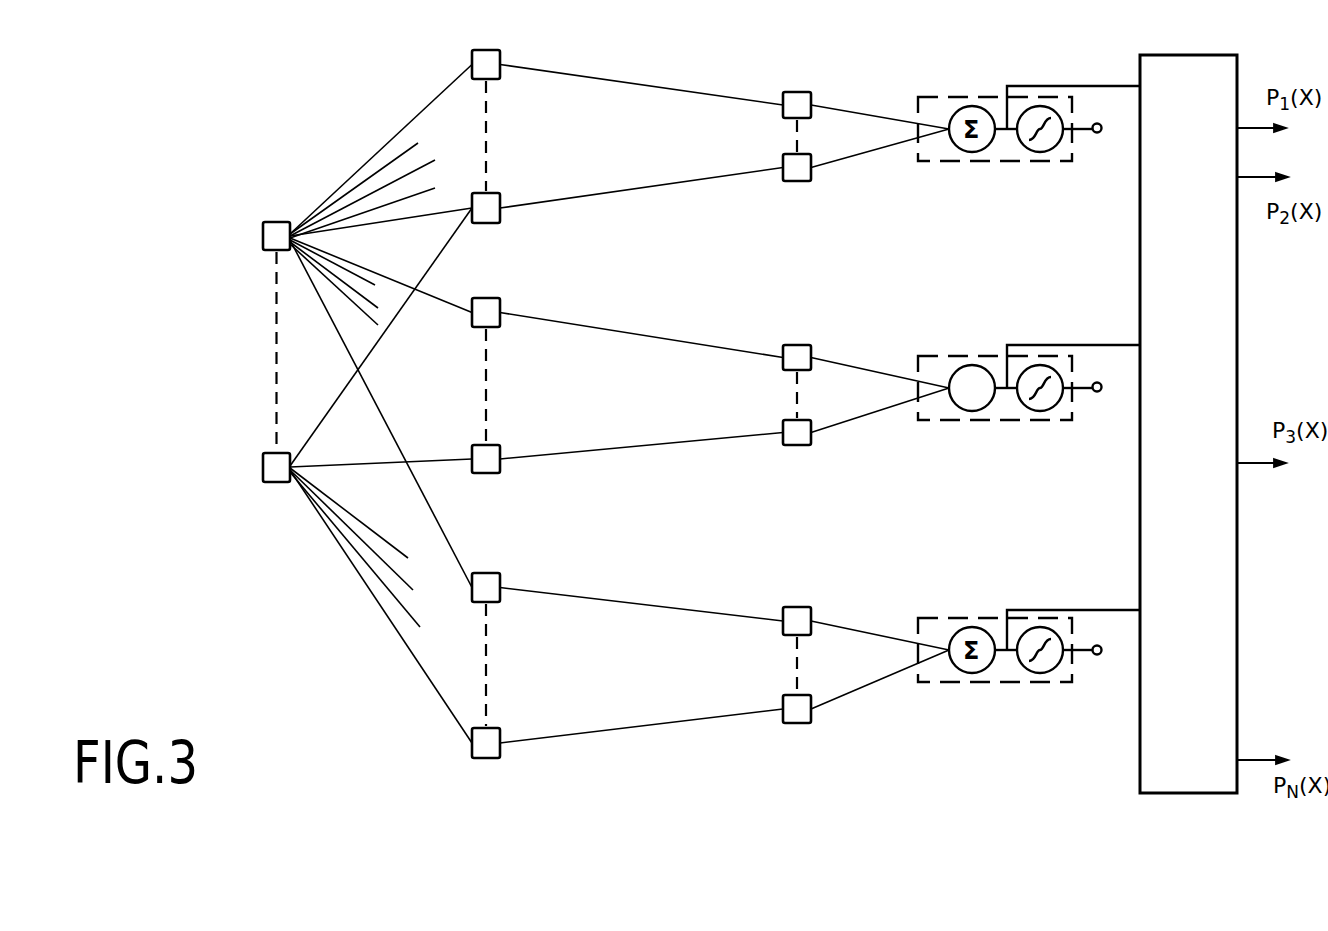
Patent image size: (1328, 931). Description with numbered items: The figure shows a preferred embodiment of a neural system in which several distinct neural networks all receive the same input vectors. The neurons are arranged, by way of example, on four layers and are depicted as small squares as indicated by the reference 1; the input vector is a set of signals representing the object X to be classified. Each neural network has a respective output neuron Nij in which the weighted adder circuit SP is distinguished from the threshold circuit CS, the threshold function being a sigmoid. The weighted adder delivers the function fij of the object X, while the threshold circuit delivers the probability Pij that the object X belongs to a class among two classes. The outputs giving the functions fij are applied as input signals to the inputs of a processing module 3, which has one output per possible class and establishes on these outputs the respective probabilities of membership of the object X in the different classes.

The neuron 1 is at (273, 222).
The processing module 3 is at (1140, 772).
The object to be classified X is at (247, 236).
The output neuron Nij is at (917, 358).
The weighted adder output function fij is at (1032, 345).
The probability of class membership Pij is at (1093, 393).